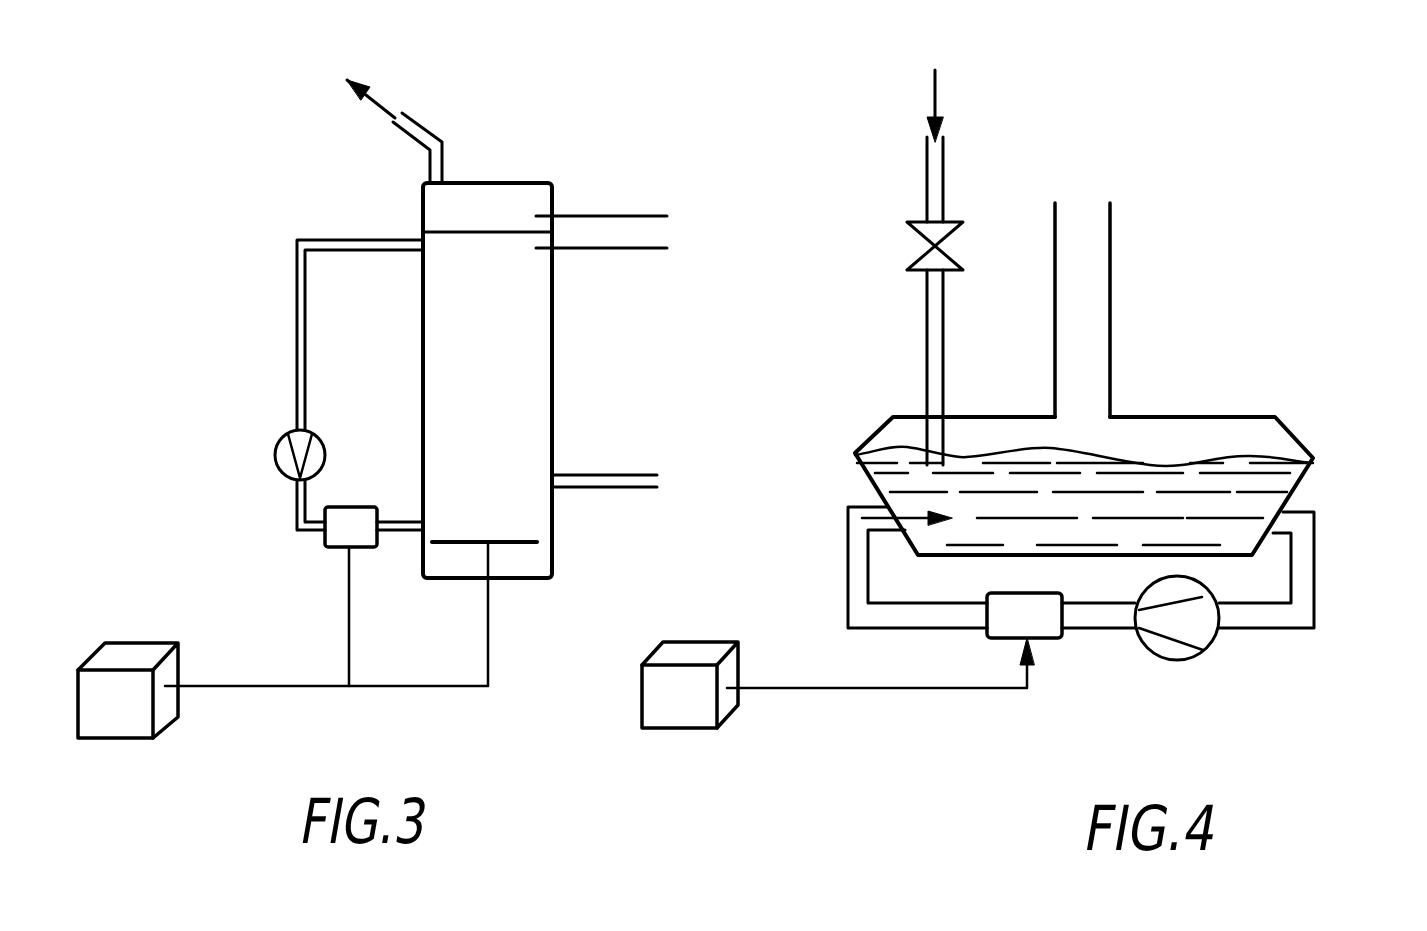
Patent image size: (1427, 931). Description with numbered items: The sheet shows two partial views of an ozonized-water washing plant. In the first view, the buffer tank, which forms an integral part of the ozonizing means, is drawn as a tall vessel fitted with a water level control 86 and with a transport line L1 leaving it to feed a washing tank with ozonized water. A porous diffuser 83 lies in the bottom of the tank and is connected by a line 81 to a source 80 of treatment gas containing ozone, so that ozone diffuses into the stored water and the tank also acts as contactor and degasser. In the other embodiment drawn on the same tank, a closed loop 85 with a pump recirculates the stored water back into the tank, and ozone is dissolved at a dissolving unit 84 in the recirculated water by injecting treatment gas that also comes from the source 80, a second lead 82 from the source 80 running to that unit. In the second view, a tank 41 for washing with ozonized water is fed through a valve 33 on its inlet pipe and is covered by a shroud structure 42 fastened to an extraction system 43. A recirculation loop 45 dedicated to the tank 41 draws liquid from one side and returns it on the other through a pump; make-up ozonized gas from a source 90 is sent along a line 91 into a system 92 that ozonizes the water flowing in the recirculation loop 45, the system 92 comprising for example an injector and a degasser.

In FIG. 3, the source of treatment gas 80 is at (137, 655).
In FIG. 3, the line 81 is at (490, 662).
In FIG. 3, the electrical lead to metering unit 82 is at (347, 633).
In FIG. 3, the porous diffuser 83 is at (462, 540).
In FIG. 3, the ozone dissolving means 84 is at (353, 505).
In FIG. 3, the closed loop 85 is at (347, 240).
In FIG. 3, the water level control 86 is at (587, 217).
In FIG. 3, the transport line L1 is at (604, 453).
In FIG. 4, the valve 33 is at (925, 247).
In FIG. 4, the tank for washing with ozonized water 41 is at (1303, 482).
In FIG. 4, the shroud structure 42 is at (1132, 412).
In FIG. 4, the extraction system 43 is at (1112, 300).
In FIG. 4, the recirculation loop 45 is at (1313, 597).
In FIG. 4, the source of ozonized gas 90 is at (703, 648).
In FIG. 4, the line 91 is at (935, 692).
In FIG. 4, the ozonizing system 92 is at (1052, 637).